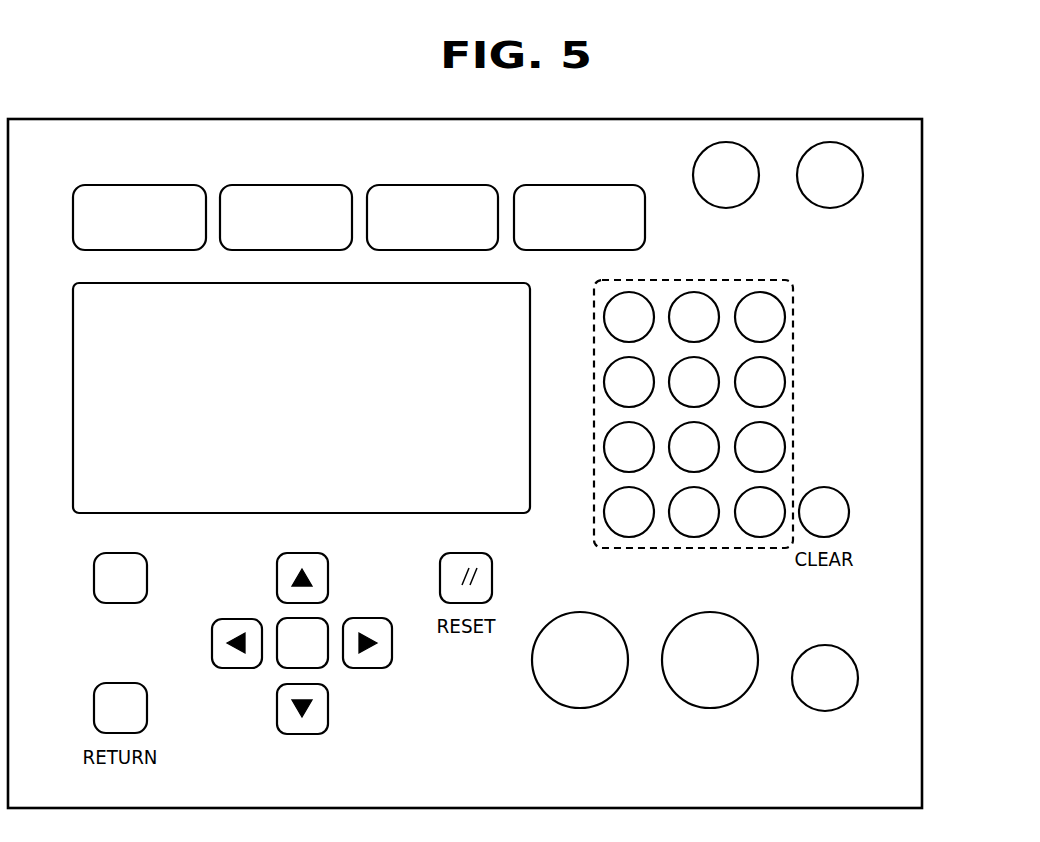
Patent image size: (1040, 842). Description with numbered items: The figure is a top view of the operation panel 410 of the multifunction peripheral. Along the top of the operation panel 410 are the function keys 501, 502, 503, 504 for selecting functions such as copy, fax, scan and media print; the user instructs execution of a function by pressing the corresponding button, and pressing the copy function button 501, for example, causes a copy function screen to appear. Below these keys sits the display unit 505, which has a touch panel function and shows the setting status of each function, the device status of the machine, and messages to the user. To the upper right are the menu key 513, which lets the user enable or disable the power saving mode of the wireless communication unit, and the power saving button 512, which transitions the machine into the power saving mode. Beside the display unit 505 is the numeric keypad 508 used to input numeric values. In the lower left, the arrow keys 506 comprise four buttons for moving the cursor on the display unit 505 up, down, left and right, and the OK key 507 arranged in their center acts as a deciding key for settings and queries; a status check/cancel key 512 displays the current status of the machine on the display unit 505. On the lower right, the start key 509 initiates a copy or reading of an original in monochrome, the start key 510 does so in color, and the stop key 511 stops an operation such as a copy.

The operation panel 410 is at (924, 226).
The copy function button 501 is at (139, 185).
The function key 502 is at (285, 185).
The function key 503 is at (427, 185).
The function key 504 is at (574, 185).
The display unit 505 is at (105, 283).
The arrow keys 506 is at (277, 590).
The OK key 507 is at (320, 618).
The numeric keypad 508 is at (795, 320).
The start key 509 is at (578, 612).
The start key 510 is at (708, 612).
The stop key 511 is at (823, 645).
The power saving button / status check/cancel key 512 is at (863, 166).
The menu key 513 is at (759, 166).